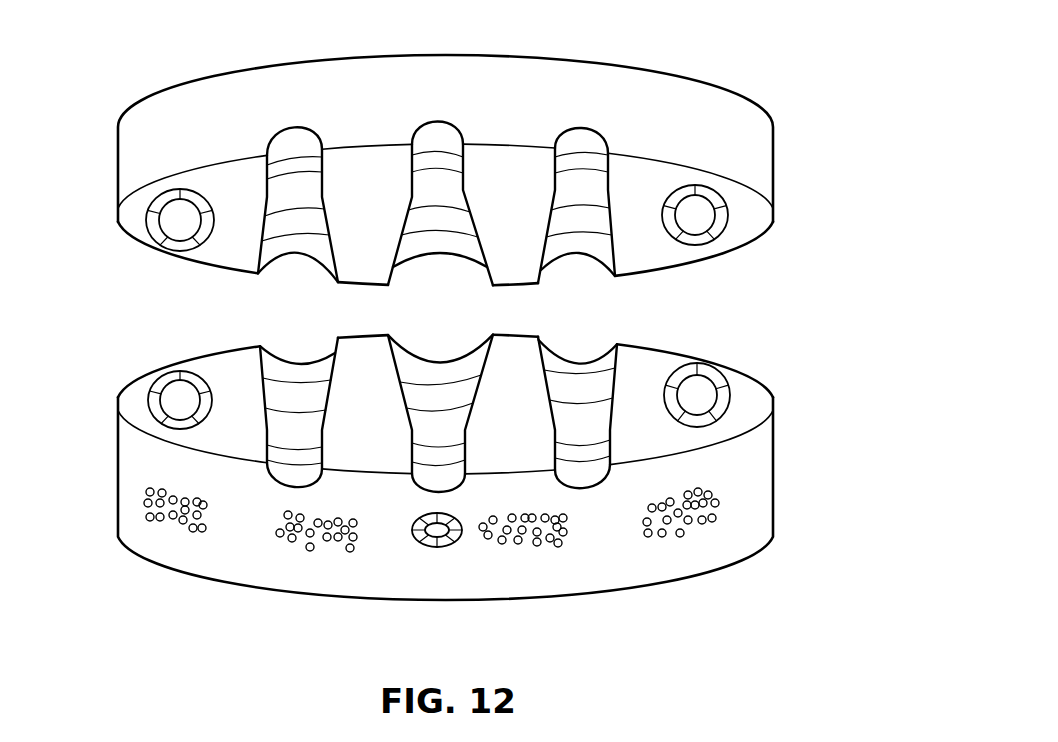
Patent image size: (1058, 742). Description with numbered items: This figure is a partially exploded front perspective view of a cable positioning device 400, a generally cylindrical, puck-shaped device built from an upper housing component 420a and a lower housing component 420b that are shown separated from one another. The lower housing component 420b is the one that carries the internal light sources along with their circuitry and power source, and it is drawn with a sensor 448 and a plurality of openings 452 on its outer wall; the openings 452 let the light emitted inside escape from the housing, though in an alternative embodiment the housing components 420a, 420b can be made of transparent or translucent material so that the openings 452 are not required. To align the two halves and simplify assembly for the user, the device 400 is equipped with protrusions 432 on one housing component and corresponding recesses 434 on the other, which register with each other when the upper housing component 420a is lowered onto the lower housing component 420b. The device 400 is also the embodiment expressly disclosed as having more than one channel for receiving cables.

The cable positioning device 400 is at (710, 49).
The upper housing component 420a is at (138, 145).
The lower housing component 420b is at (143, 463).
The protrusions 432 is at (178, 219).
The recesses 434 is at (180, 405).
The sensor 448 is at (437, 548).
The openings 452 is at (173, 527).